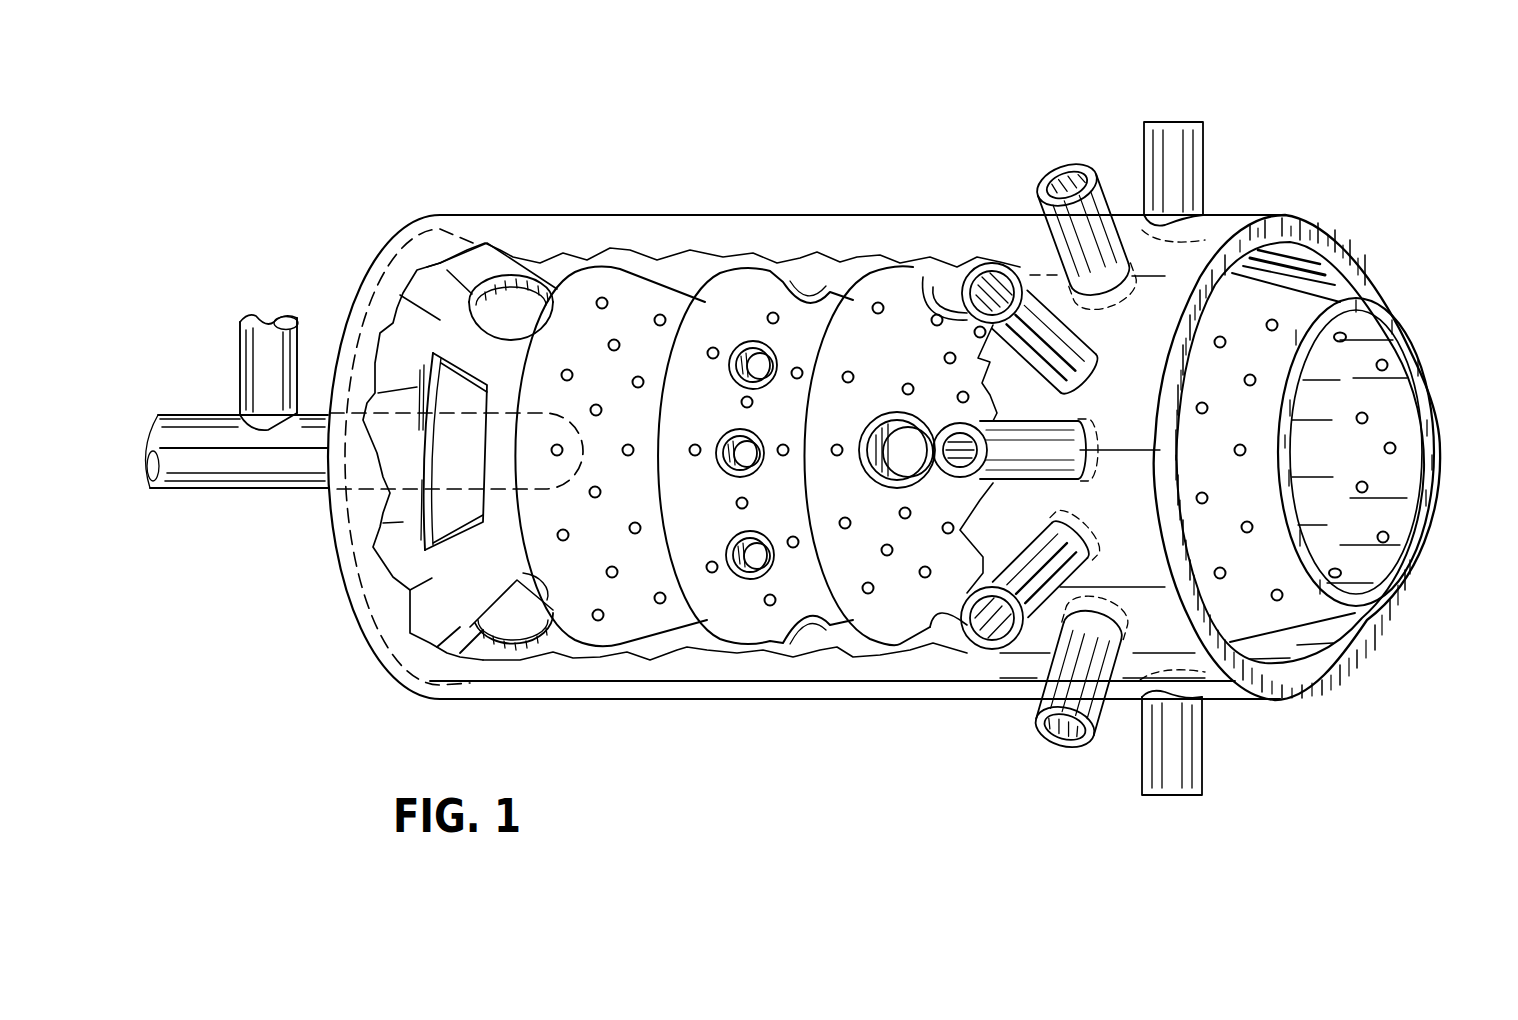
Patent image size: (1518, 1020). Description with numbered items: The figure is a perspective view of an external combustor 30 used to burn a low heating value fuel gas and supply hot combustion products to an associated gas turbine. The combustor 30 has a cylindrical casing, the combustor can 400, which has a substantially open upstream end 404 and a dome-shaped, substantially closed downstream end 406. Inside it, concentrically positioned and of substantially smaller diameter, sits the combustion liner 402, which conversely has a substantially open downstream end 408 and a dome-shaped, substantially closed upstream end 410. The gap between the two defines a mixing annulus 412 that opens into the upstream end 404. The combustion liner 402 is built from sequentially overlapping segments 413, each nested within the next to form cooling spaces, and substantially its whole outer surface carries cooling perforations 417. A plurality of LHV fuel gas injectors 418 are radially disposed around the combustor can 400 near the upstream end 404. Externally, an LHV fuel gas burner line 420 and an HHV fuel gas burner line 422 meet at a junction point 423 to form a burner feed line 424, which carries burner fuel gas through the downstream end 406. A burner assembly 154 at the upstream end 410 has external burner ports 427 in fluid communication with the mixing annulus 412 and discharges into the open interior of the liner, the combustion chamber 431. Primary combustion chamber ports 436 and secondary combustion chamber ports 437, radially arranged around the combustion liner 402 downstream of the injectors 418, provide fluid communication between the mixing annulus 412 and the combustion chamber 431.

The combustor 30 is at (768, 200).
The burner assembly 154 is at (512, 272).
The combustor can 400 is at (1228, 217).
The combustion liner 402 is at (1325, 290).
The upstream end of the combustor can 404 is at (1310, 223).
The downstream end of the combustor can 406 is at (382, 256).
The downstream end of the combustion liner 408 is at (1433, 385).
The upstream end of the combustion liner 410 is at (582, 278).
The mixing annulus 412 is at (1313, 647).
The segments 413 is at (832, 622).
The cooling perforations 417 is at (662, 314).
The LHV fuel gas injectors 418 is at (1083, 412).
The LHV fuel gas burner line 420 is at (302, 332).
The HHV fuel gas burner line 422 is at (207, 413).
The junction point 423 is at (238, 412).
The burner feed line 424 is at (315, 492).
The external burner ports 427 is at (473, 375).
The combustion chamber 431 is at (1392, 465).
The primary combustion chamber ports 436 is at (933, 322).
The secondary combustion chamber ports 437 is at (738, 430).